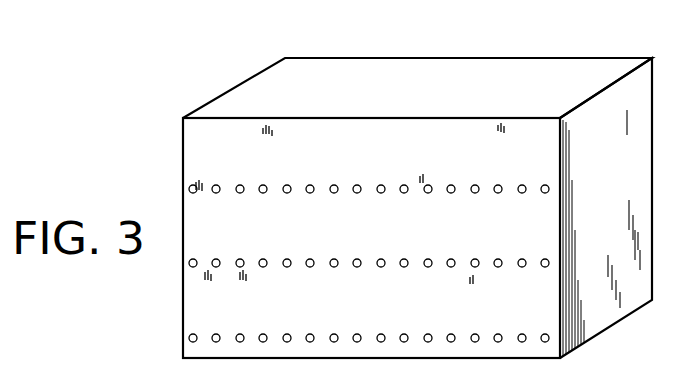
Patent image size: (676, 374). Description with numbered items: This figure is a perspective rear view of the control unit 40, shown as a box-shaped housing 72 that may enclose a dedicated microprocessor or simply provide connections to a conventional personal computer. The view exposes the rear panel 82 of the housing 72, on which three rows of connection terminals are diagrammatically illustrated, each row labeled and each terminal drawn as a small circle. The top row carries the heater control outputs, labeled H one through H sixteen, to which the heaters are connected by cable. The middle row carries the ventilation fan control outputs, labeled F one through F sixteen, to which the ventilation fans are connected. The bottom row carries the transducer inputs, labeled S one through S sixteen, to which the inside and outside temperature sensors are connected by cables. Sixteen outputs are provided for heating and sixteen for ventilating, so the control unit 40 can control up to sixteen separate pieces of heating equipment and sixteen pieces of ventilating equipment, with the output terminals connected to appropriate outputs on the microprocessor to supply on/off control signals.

The control unit 40 is at (352, 50).
The housing 72 is at (510, 75).
The rear panel 82 is at (205, 139).